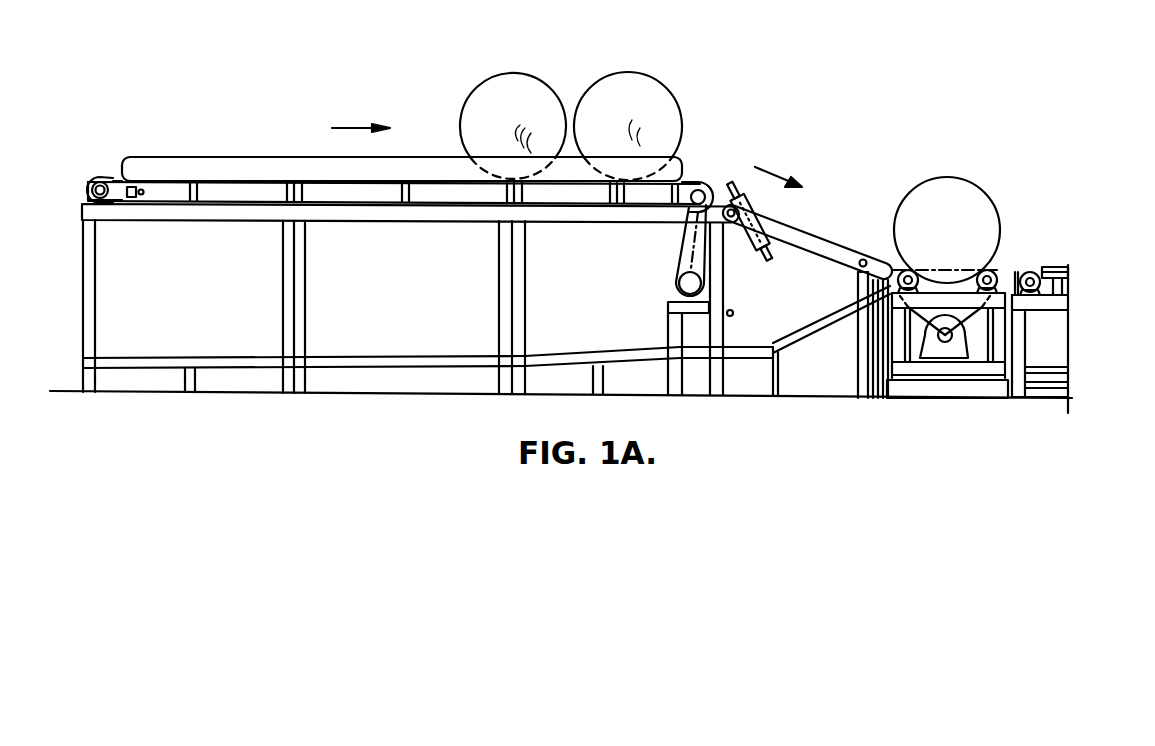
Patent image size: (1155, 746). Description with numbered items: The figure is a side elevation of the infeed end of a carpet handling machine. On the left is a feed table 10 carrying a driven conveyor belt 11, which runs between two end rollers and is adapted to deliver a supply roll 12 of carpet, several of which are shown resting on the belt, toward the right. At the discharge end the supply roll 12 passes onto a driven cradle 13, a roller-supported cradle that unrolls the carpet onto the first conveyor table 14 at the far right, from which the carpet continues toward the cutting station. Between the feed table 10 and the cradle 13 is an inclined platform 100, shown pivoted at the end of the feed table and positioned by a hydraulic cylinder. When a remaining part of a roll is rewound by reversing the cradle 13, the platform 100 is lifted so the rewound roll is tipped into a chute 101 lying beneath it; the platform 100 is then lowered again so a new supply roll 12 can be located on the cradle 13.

The feed table 10 is at (365, 183).
The driven conveyor belt 11 is at (113, 180).
The supply roll 12 is at (531, 117).
The driven cradle 13 is at (1008, 256).
The first conveyor table 14 is at (1053, 270).
The platform 100 is at (805, 231).
The chute 101 is at (818, 323).